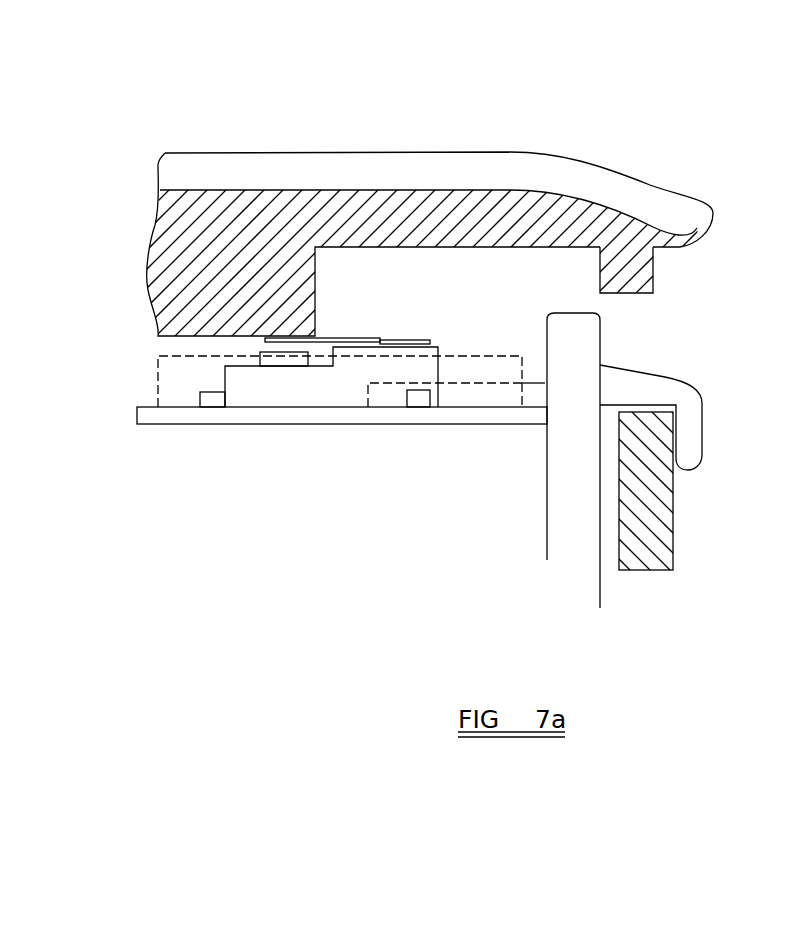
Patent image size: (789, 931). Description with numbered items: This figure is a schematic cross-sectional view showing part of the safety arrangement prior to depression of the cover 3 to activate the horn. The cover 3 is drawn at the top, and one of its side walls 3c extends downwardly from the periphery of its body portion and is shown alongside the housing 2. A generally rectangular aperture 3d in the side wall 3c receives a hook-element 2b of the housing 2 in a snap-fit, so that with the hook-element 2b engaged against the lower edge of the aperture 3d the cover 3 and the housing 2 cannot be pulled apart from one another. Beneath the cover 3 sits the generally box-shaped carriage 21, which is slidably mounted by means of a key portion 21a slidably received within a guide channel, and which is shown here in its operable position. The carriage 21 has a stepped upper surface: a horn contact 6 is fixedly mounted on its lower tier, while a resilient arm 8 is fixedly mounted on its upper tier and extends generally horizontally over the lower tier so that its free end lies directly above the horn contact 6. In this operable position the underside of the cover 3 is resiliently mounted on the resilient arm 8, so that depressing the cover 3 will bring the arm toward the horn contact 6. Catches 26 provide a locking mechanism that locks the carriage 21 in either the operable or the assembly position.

The cover 3 is at (623, 175).
The generally rectangular apertures 3d is at (642, 333).
The side walls 3c is at (673, 522).
The resilient arm 8 is at (357, 336).
The horn contact 6 is at (277, 362).
The carriage 21 is at (292, 392).
The key portion 21a is at (417, 402).
The catches 26 is at (210, 397).
The housing 2 is at (595, 598).
The hook-elements 2b is at (693, 458).